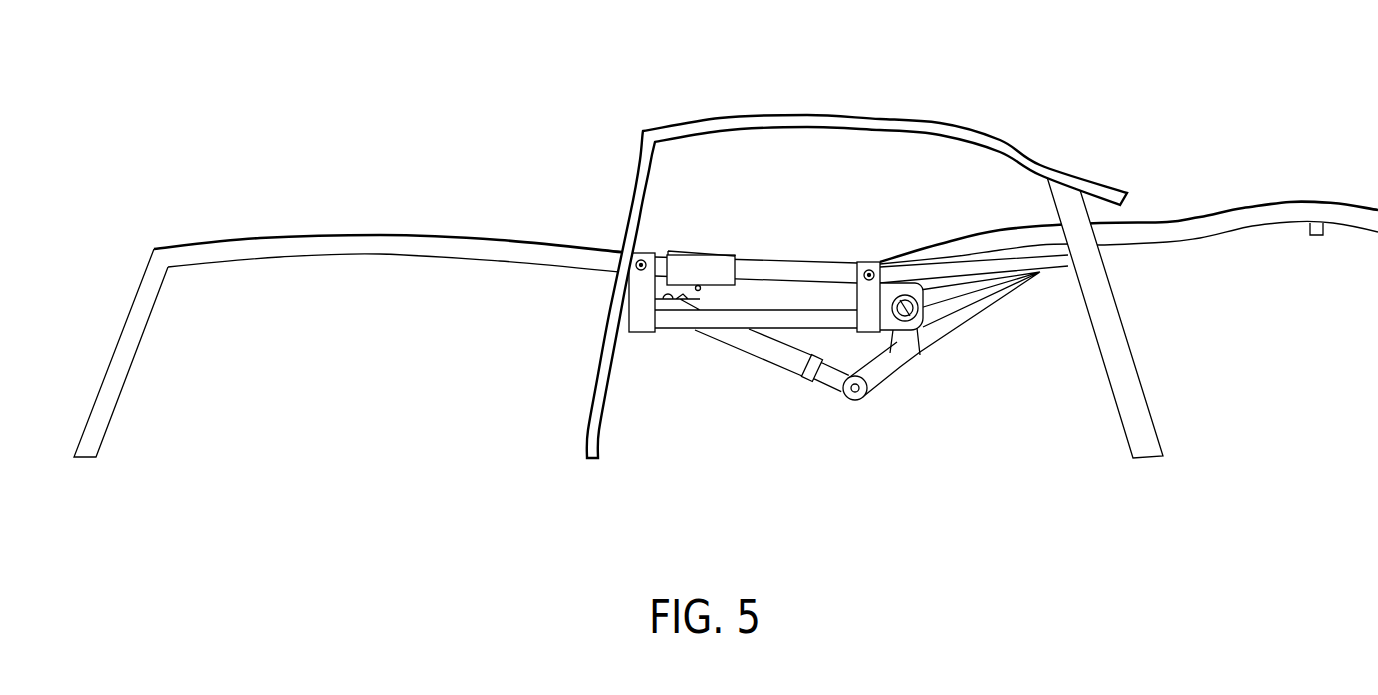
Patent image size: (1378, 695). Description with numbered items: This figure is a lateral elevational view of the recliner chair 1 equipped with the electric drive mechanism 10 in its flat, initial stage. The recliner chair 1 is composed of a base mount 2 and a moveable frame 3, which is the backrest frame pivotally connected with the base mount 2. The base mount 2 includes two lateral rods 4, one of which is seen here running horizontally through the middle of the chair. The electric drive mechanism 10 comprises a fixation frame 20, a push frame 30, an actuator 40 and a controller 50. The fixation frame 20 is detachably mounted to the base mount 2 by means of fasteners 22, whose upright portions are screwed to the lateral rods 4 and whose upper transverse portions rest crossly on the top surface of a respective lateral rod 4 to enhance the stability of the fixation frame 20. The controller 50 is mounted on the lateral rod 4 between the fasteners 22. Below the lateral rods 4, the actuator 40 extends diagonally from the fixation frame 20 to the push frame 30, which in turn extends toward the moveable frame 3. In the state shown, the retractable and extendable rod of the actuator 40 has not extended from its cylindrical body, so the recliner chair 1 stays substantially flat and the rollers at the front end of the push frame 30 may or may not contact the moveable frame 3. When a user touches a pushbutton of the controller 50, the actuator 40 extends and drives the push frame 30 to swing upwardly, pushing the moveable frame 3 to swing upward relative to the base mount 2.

The recliner chair 1 is at (571, 103).
The base mount 2 is at (356, 247).
The moveable frame 3 is at (1243, 218).
The lateral rods 4 is at (773, 270).
The electric drive mechanism 10 is at (852, 416).
The fixation frame 20 is at (672, 333).
The fasteners 22 is at (869, 262).
The push frame 30 is at (950, 297).
The actuator 40 is at (773, 364).
The controller 50 is at (722, 268).